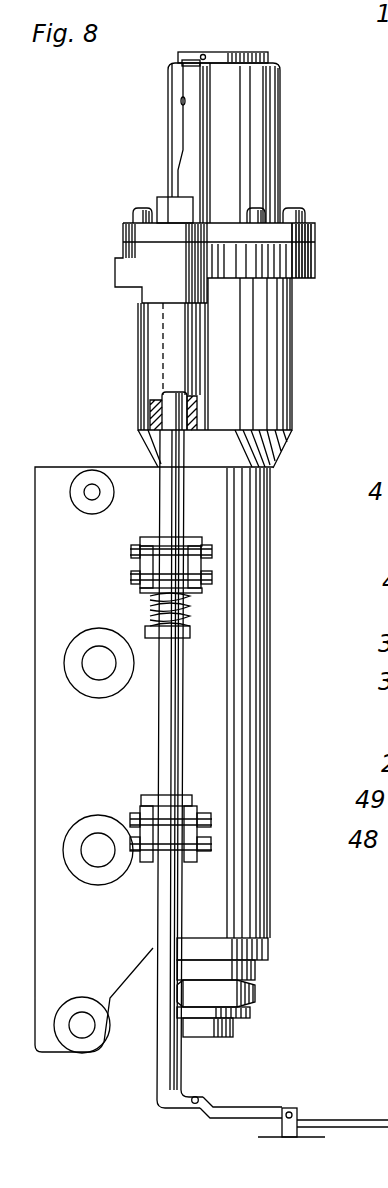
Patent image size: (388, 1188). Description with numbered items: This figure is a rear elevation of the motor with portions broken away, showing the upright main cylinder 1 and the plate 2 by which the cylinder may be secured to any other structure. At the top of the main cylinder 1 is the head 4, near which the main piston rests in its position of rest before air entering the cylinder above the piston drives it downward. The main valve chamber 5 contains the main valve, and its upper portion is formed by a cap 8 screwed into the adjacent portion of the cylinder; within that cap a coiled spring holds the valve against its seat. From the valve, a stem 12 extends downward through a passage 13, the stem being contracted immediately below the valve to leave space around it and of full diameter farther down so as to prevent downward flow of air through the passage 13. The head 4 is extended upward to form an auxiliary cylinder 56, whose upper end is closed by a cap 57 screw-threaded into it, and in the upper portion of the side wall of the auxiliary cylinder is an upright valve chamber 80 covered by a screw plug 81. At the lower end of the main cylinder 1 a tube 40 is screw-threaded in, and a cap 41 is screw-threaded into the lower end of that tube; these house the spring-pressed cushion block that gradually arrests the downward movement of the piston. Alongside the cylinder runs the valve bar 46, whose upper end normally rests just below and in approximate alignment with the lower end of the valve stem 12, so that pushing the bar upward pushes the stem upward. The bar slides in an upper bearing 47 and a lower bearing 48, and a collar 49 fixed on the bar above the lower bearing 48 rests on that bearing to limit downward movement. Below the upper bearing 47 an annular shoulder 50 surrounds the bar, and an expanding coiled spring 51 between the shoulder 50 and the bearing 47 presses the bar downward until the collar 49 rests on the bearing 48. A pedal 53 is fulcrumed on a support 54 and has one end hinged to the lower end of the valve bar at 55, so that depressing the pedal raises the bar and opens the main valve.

The main cylinder 1 is at (280, 396).
The plate 2 is at (45, 745).
The head 4 is at (313, 223).
The main valve chamber 5 is at (160, 278).
The cap 8 is at (172, 211).
The stem 12 is at (170, 405).
The passage 13 is at (153, 412).
The tube 40 is at (250, 971).
The cap 41 is at (215, 1036).
The valve bar 46 is at (160, 928).
The upper bearing 47 is at (146, 549).
The lower bearing 48 is at (145, 820).
The collar 49 is at (156, 795).
The annular shoulder 50 is at (151, 640).
The expanding coiled spring 51 is at (155, 613).
The pedal 53 is at (333, 1120).
The support 54 is at (283, 1123).
The hinge 55 is at (192, 1104).
The auxiliary cylinder 56 is at (272, 114).
The cap 57 is at (267, 55).
The valve chamber 80 is at (187, 145).
The screw plug 81 is at (200, 58).